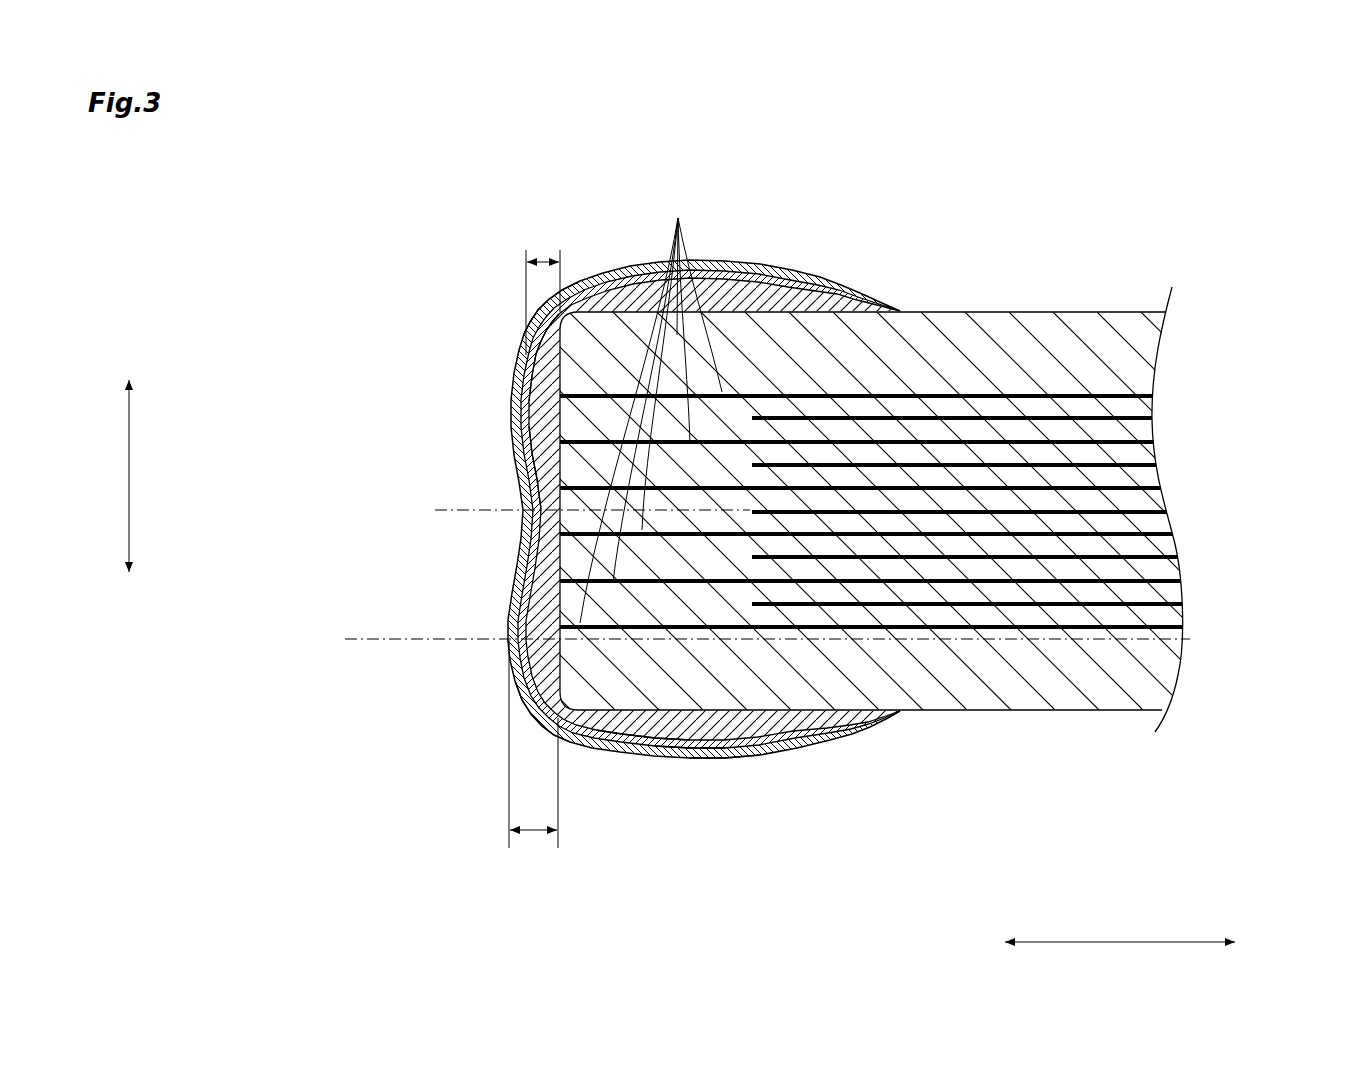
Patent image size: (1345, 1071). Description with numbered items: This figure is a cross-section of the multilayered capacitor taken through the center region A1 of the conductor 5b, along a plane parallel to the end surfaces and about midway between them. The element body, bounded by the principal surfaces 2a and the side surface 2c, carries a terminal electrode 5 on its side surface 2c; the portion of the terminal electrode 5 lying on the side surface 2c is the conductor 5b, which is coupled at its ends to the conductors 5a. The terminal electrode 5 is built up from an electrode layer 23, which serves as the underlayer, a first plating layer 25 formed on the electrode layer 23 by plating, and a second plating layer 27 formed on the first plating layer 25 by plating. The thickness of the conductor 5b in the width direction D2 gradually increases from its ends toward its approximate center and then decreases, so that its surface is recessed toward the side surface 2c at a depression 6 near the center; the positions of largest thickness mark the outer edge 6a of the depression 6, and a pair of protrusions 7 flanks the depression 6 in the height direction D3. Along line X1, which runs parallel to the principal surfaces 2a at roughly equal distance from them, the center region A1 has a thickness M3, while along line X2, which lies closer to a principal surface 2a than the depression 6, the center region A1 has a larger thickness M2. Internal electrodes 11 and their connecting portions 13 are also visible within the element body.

The principal surface 2a is at (1030, 312).
The side surface 2c is at (552, 368).
The terminal electrode 5 is at (636, 492).
The conductor 5a is at (750, 266).
The conductor 5b is at (510, 606).
The depression 6 is at (535, 535).
The outer edge 6a is at (522, 472).
The protrusion 7 is at (520, 320).
The electrodes 11 is at (1000, 605).
The wiring 13 is at (651, 402).
The electrode layer 23 is at (655, 726).
The first plating layer 25 is at (697, 752).
The second plating layer 27 is at (745, 752).
The center region A1 is at (505, 399).
The line X1 is at (470, 509).
The line X2 is at (418, 643).
The thickness M2 is at (533, 756).
The thickness M3 is at (546, 289).
The width direction D2 is at (1120, 961).
The height direction D3 is at (107, 476).